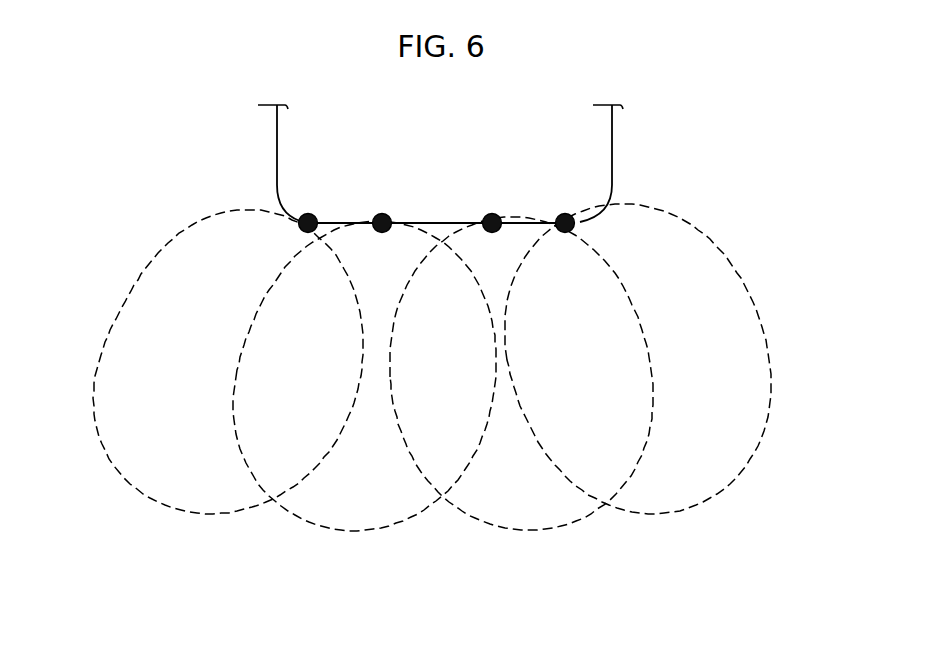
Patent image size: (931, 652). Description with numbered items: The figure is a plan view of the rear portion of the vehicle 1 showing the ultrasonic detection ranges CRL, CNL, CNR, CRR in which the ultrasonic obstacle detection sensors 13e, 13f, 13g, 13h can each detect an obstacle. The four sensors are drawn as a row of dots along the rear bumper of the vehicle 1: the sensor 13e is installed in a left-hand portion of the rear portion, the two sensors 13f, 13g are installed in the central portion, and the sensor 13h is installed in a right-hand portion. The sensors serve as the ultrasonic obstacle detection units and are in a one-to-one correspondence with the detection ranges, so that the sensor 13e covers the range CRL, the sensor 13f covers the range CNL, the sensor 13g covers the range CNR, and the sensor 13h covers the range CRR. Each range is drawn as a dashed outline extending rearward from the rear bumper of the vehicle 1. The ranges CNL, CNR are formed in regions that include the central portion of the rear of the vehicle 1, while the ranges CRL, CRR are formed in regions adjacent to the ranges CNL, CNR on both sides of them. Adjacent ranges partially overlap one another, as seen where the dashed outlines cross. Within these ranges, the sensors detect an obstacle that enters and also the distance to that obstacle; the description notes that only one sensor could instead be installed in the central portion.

The vehicle 1 is at (613, 131).
The ultrasonic obstacle detection sensor 13e is at (308, 212).
The ultrasonic obstacle detection sensor 13f is at (382, 212).
The ultrasonic obstacle detection sensor 13g is at (488, 212).
The ultrasonic obstacle detection sensor 13h is at (564, 212).
The ultrasonic detection range CRL is at (199, 516).
The ultrasonic detection range CNL is at (333, 533).
The ultrasonic detection range CNR is at (529, 536).
The ultrasonic detection range CRR is at (667, 516).